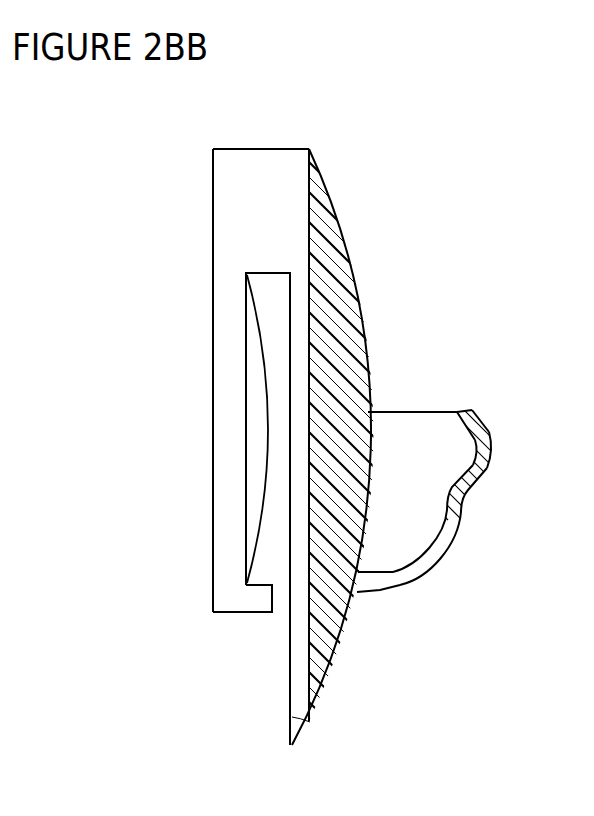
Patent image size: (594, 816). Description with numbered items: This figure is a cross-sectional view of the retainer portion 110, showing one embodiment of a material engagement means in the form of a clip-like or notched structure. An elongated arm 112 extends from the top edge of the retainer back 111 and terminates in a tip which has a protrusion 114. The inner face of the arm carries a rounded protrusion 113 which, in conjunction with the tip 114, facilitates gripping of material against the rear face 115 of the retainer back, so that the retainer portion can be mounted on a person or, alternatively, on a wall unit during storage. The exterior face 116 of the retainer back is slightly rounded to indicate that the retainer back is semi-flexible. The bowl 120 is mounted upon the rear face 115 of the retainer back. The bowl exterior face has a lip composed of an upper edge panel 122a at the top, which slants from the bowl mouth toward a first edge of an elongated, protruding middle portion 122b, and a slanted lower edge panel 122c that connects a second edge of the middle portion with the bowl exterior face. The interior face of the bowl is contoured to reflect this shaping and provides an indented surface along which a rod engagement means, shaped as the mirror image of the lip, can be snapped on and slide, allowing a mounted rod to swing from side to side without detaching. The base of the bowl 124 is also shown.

The retainer portion 110 is at (185, 345).
The retainer back 111 is at (275, 165).
The elongated arm 112 is at (218, 450).
The rounded protrusion 113 is at (257, 502).
The tip protrusion 114 is at (253, 598).
The rear face of the retainer back 115 is at (310, 722).
The exterior face of the retainer back 116 is at (337, 652).
The bowl 120 is at (466, 580).
The upper edge panel 122a is at (483, 420).
The middle portion of the lip 122b is at (476, 453).
The lower edge panel 122c is at (465, 482).
The base of the bowl 124 is at (380, 592).